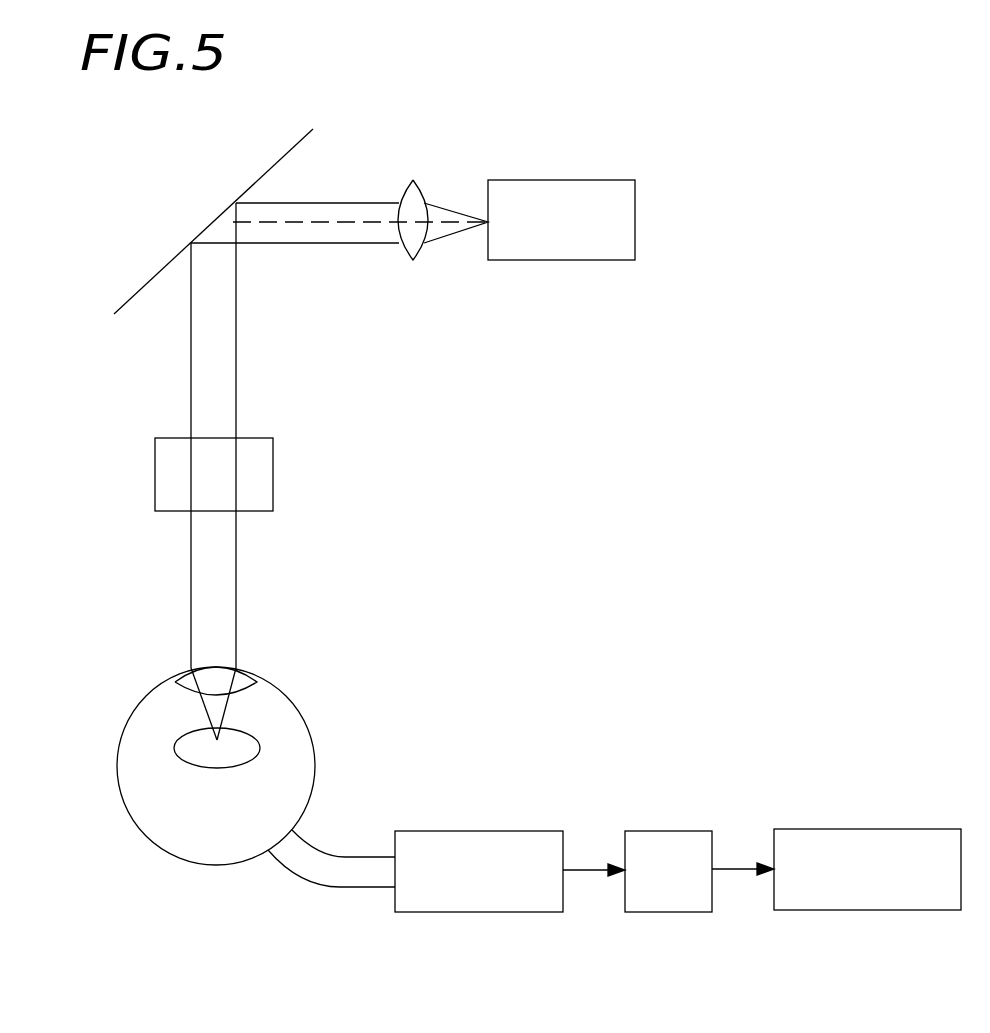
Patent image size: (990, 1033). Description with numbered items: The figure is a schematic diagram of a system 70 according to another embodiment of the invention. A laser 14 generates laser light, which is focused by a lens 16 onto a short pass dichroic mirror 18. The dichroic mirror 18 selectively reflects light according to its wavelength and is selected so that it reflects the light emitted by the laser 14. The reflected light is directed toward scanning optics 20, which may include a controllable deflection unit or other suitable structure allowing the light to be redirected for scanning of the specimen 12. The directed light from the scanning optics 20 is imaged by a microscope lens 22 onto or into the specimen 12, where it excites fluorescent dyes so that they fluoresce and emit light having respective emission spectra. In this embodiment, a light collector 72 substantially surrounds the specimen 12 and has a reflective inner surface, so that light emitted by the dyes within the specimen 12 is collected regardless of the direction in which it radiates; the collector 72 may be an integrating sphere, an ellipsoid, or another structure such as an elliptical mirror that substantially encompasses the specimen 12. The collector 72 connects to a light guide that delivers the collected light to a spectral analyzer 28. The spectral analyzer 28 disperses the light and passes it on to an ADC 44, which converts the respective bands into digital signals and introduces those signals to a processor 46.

The specimen 12 is at (173, 748).
The laser 14 is at (593, 180).
The lens 16 is at (413, 178).
The short pass dichroic mirror 18 is at (297, 148).
The scanning optics 20 is at (273, 450).
The microscope lens 22 is at (178, 684).
The spectral analyzer 28 is at (503, 831).
The ADC 44 is at (673, 831).
The processor 46 is at (895, 829).
The system 70 is at (73, 393).
The light collector 72 is at (297, 707).